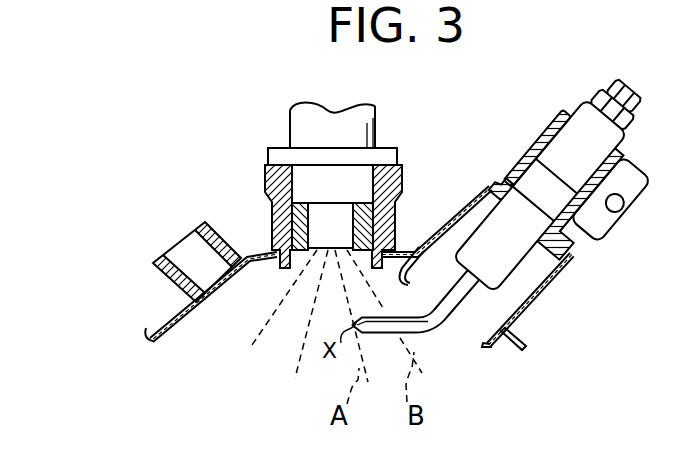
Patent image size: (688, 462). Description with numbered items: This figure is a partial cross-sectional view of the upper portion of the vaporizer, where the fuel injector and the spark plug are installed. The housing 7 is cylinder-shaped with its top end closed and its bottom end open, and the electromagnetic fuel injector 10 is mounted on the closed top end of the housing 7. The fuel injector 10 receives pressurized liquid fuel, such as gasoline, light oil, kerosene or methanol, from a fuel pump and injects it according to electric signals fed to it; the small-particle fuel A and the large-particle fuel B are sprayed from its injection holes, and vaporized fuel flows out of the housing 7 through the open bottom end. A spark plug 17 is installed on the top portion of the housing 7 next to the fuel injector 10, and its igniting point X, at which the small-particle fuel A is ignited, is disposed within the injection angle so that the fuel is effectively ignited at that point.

The electromagnetic fuel injector 10 is at (300, 128).
The spark plug 17 is at (492, 242).
The housing 7 is at (514, 337).